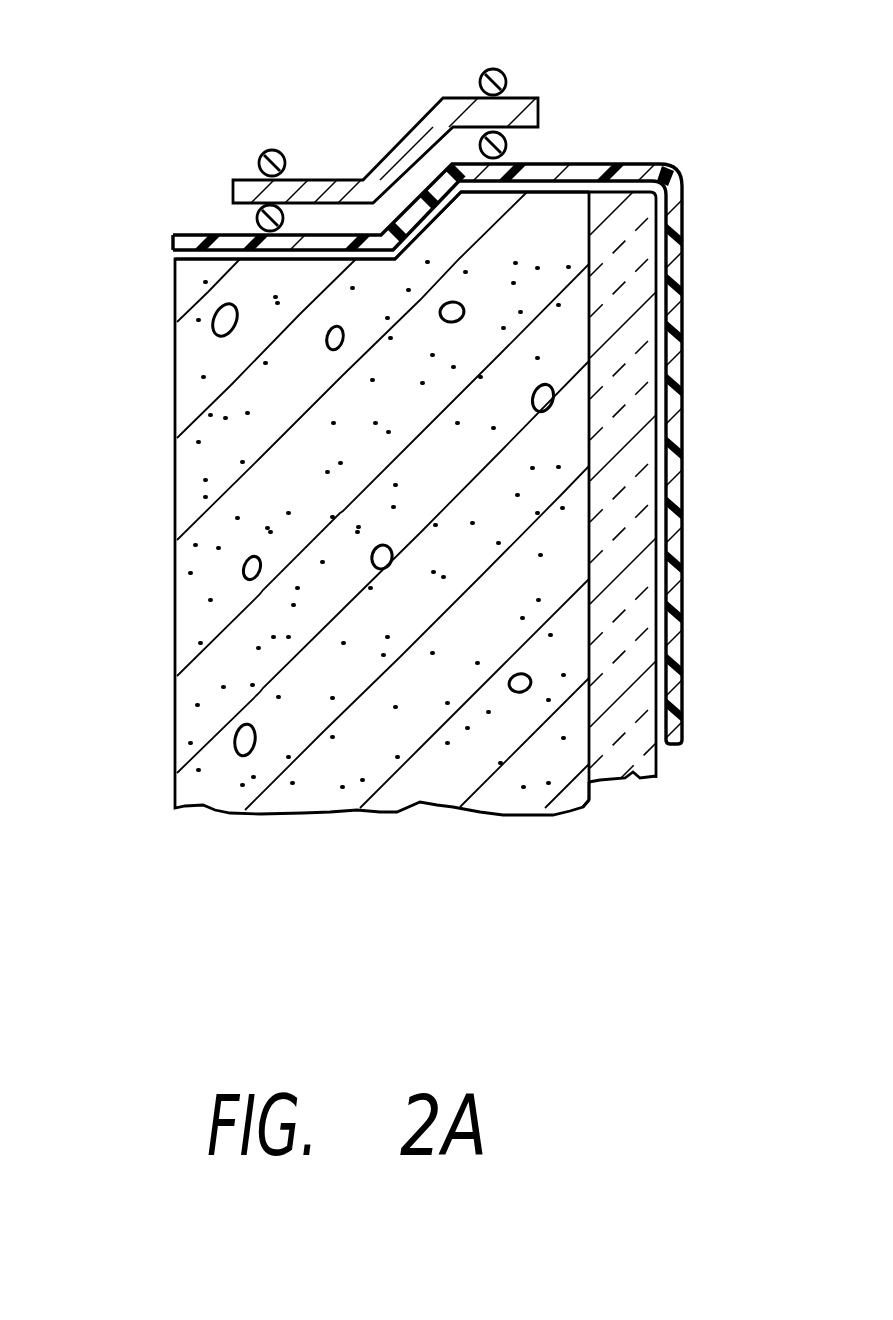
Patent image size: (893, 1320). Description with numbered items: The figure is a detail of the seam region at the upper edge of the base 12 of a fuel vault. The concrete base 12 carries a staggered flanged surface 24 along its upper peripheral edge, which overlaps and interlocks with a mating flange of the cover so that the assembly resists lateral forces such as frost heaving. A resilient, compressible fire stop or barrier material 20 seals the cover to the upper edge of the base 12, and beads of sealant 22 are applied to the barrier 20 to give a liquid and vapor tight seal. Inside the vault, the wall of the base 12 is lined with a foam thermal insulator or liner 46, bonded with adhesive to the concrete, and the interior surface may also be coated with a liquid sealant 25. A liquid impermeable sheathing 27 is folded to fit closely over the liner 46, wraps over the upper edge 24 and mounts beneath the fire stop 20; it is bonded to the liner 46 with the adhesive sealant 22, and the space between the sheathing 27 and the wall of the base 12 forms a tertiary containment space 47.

The base 12 is at (173, 378).
The fire stop or barrier material 20 is at (390, 150).
The beads of sealant 22 is at (262, 207).
The flanged surface 24 is at (220, 258).
The liquid sealant 25 is at (592, 803).
The liquid impermeable sheathing 27 is at (683, 493).
The thermal insulator or liner 46 is at (625, 388).
The tertiary containment space 47 is at (590, 597).